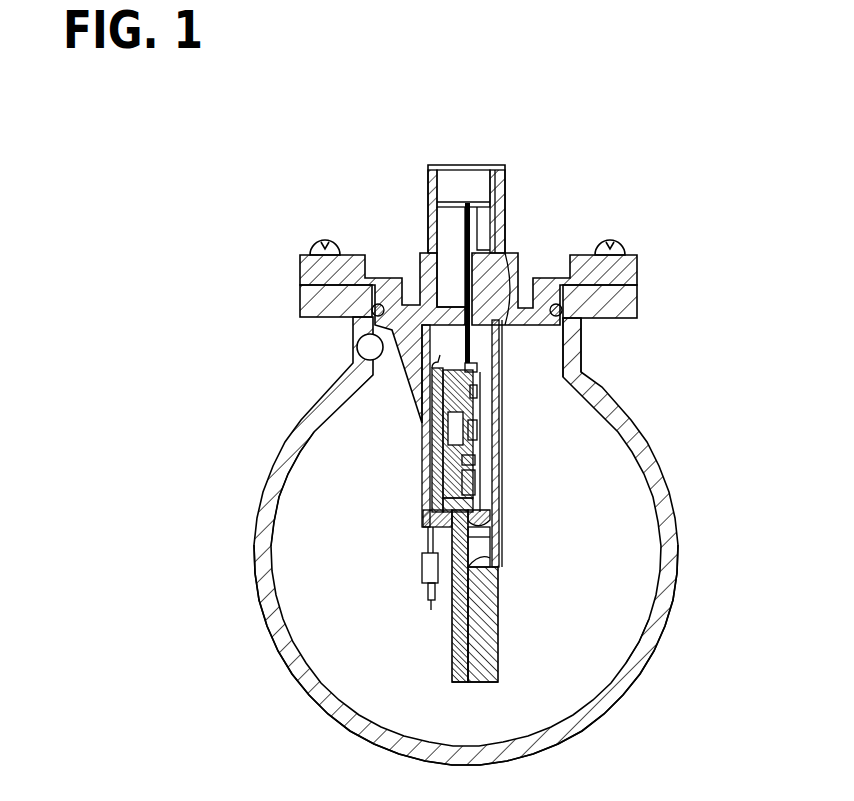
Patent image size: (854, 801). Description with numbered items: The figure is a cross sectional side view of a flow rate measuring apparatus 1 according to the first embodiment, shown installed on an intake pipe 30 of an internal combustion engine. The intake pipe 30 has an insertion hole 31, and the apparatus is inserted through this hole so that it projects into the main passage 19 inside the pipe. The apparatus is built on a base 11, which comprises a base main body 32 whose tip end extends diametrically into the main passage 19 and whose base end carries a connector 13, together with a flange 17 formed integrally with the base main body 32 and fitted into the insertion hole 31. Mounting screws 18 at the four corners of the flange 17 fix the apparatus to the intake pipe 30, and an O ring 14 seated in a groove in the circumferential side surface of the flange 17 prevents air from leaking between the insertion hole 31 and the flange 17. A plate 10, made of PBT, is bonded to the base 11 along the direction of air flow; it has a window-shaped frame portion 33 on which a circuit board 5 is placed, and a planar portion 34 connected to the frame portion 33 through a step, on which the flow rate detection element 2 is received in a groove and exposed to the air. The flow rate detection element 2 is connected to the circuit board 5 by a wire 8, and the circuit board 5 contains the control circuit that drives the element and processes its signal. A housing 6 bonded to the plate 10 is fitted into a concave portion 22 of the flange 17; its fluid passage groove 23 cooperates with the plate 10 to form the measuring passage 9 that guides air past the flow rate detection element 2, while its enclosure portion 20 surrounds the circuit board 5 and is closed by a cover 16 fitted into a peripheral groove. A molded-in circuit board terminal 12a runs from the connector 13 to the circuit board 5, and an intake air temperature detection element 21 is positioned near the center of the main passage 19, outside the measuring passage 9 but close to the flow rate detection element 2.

The flow rate measuring apparatus 1 is at (387, 530).
The flow rate detection element 2 is at (612, 597).
The circuit board 5 is at (463, 404).
The housing 6 is at (497, 652).
The wire 8 is at (470, 373).
The measuring passage 9 is at (490, 537).
The plate 10 is at (452, 660).
The base 11 is at (428, 482).
The circuit board terminal 12a is at (477, 222).
The connector 13 is at (427, 188).
The O ring 14 is at (600, 320).
The cover 16 is at (503, 436).
The flange 17 is at (613, 268).
The mounting screws 18 is at (327, 240).
The main passage 19 is at (490, 552).
The enclosure portion 20 is at (483, 445).
The intake air temperature detection element 21 is at (420, 572).
The concave portion 22 is at (497, 308).
The fluid passage groove 23 is at (500, 558).
The intake pipe 30 is at (312, 682).
The insertion hole 31 is at (360, 363).
The base main body 32 is at (427, 453).
The frame portion 33 is at (427, 513).
The planar portion 34 is at (452, 622).